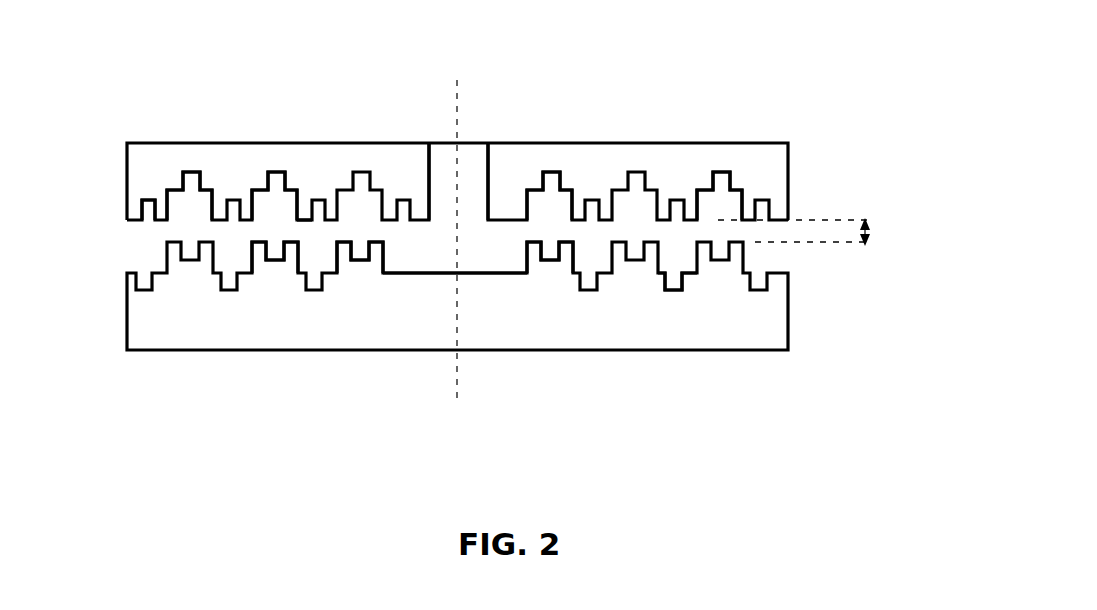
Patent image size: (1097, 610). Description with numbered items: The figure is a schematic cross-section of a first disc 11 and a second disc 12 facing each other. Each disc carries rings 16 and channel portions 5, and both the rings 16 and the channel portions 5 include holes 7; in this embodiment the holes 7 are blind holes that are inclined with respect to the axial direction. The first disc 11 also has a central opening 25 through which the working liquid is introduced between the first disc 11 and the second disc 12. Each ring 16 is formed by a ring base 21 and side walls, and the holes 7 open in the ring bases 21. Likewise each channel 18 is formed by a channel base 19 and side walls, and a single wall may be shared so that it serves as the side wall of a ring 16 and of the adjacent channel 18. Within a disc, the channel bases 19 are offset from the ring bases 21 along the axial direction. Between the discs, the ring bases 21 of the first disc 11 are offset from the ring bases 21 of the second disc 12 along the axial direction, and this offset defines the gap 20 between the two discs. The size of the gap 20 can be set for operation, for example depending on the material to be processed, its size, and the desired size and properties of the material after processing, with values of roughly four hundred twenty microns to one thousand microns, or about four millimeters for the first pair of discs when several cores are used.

The channel portion 5 is at (274, 245).
The hole 7 is at (432, 245).
The first disc 11 is at (457, 116).
The second disc 12 is at (457, 353).
The ring 16 is at (455, 364).
The channel 18 is at (586, 116).
The channel base 19 is at (153, 116).
The gap 20 is at (846, 255).
The ring base 21 is at (437, 239).
The central opening 25 is at (423, 116).